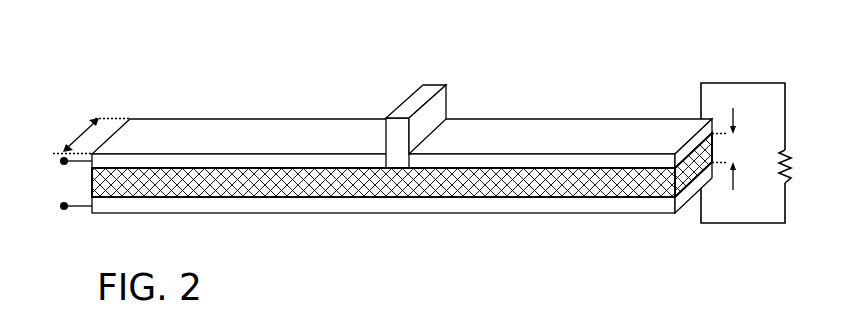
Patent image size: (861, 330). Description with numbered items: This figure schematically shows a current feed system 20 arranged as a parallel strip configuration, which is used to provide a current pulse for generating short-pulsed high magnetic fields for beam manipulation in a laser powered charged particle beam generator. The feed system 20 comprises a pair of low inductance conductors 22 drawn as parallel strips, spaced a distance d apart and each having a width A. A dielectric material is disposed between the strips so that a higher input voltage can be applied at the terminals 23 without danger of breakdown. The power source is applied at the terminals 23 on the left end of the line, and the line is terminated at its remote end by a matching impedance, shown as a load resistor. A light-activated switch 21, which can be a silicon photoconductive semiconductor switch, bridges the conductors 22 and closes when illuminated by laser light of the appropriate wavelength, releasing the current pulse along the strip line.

The current feed system 20 is at (233, 62).
The light-activated switch 21 is at (430, 85).
The low inductance conductors 22 is at (645, 119).
The terminals 23 is at (53, 157).